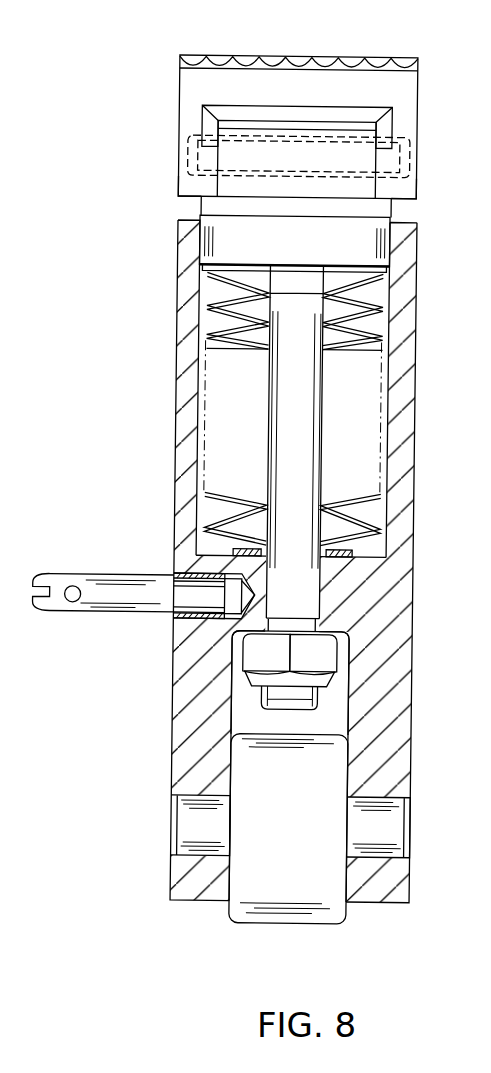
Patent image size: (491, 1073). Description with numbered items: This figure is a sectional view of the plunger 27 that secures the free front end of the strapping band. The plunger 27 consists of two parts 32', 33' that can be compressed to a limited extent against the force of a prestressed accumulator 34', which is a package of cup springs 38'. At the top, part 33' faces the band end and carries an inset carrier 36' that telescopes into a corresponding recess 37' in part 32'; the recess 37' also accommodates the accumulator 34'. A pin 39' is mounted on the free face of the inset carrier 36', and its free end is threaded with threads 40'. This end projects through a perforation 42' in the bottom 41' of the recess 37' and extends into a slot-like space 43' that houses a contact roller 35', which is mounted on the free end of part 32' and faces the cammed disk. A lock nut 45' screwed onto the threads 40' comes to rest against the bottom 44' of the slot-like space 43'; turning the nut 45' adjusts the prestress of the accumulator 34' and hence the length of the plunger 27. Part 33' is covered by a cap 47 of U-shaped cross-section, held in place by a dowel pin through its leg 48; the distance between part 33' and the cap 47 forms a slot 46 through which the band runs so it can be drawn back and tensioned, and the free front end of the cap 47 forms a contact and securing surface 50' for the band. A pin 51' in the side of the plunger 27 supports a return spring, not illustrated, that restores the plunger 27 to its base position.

The plunger 27 is at (490, 409).
The part of plunger 32' is at (317, 561).
The part of plunger 33' is at (298, 159).
The prestressed accumulator 34' is at (333, 311).
The contact roller 35' is at (288, 845).
The inset carrier 36' is at (329, 247).
The recess 37' is at (295, 504).
The cup springs 38' is at (294, 366).
The pin 39' is at (316, 442).
The threads 40' is at (293, 608).
The bottom of recess 41' is at (391, 552).
The perforation 42' is at (251, 560).
The slot-like space 43' is at (313, 683).
The bottom of slot-like space 44' is at (200, 613).
The lock nut 45' is at (319, 672).
The slot 46 is at (289, 122).
The cap 47 is at (338, 92).
The leg of cap 48 is at (190, 188).
The contact and securing surface 50' is at (299, 44).
The pin 51' is at (143, 576).